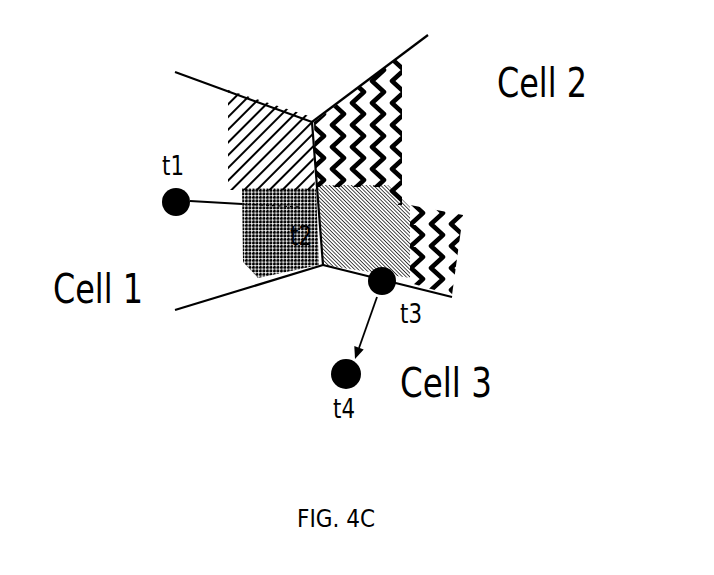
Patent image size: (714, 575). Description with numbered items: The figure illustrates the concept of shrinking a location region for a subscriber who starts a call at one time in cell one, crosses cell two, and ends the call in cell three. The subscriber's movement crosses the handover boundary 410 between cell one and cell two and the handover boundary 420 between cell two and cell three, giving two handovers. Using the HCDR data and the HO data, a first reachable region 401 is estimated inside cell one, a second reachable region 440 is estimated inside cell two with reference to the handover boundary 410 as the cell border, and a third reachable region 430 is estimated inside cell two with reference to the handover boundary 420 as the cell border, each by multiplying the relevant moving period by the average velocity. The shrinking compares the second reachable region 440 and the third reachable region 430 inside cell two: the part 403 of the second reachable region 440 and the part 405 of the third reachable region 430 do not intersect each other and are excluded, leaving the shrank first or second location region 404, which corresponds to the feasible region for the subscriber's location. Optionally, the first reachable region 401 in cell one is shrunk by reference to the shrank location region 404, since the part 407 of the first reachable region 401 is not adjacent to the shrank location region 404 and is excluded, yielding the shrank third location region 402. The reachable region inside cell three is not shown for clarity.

The first reachable region 401 is at (242, 230).
The shrank third location region 402 is at (265, 255).
The part of second reachable region 403 is at (380, 175).
The shrank first or second location region 404 is at (381, 209).
The part of third reachable region 405 is at (448, 223).
The part of first reachable region 407 is at (245, 140).
The handover boundary 410 is at (312, 118).
The handover boundary 420 is at (338, 269).
The third reachable region 430 is at (458, 260).
The second reachable region 440 is at (397, 103).